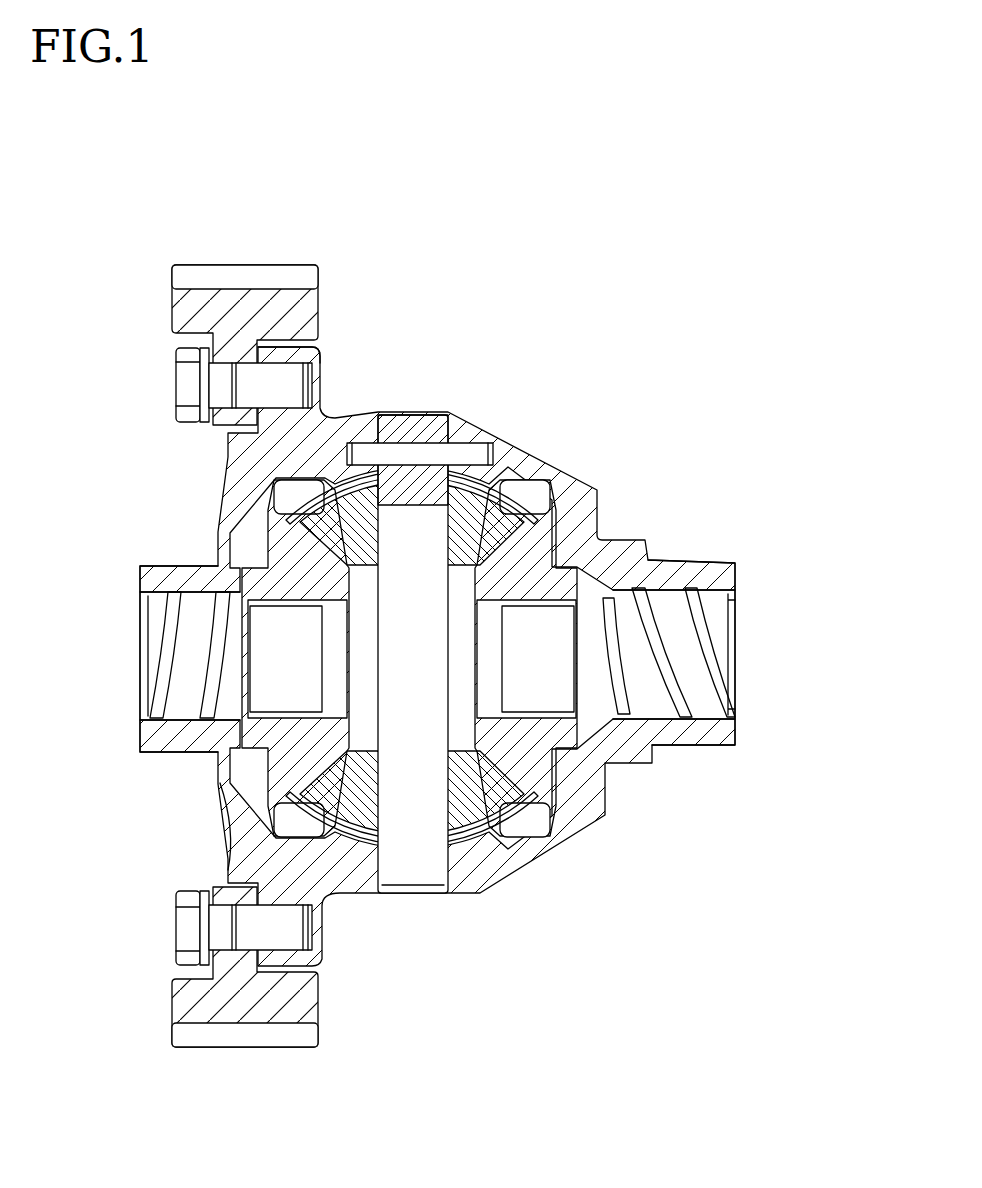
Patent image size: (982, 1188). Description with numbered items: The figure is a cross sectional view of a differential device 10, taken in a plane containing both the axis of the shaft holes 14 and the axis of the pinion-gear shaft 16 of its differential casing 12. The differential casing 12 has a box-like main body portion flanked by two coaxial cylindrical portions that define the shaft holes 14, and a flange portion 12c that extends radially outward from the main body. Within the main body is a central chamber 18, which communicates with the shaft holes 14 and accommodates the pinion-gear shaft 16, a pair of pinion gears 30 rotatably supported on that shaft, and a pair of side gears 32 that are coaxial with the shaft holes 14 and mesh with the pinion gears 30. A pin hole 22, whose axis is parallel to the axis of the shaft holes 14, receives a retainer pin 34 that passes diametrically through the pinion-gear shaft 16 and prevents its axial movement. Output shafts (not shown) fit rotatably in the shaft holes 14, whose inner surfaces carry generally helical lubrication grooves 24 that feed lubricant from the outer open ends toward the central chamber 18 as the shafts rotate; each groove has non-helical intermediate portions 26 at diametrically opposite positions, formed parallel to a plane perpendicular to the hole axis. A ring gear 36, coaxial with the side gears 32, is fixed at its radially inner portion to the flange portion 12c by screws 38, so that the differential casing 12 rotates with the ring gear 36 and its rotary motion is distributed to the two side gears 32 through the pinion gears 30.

The differential device 10 is at (612, 256).
The differential casing 12 is at (581, 460).
The flange portion 12c is at (308, 350).
The shaft holes 14 is at (150, 608).
The pinion-gear shaft 16 is at (409, 872).
The central chamber 18 is at (379, 680).
The pin hole 22 is at (509, 450).
The helical lubrication grooves 24 is at (696, 690).
The non-helical intermediate portions 26 is at (158, 642).
The pinion gears 30 is at (497, 485).
The side gears 32 is at (290, 757).
The retainer pin 34 is at (363, 452).
The ring gear 36 is at (285, 297).
The screws 38 is at (183, 385).